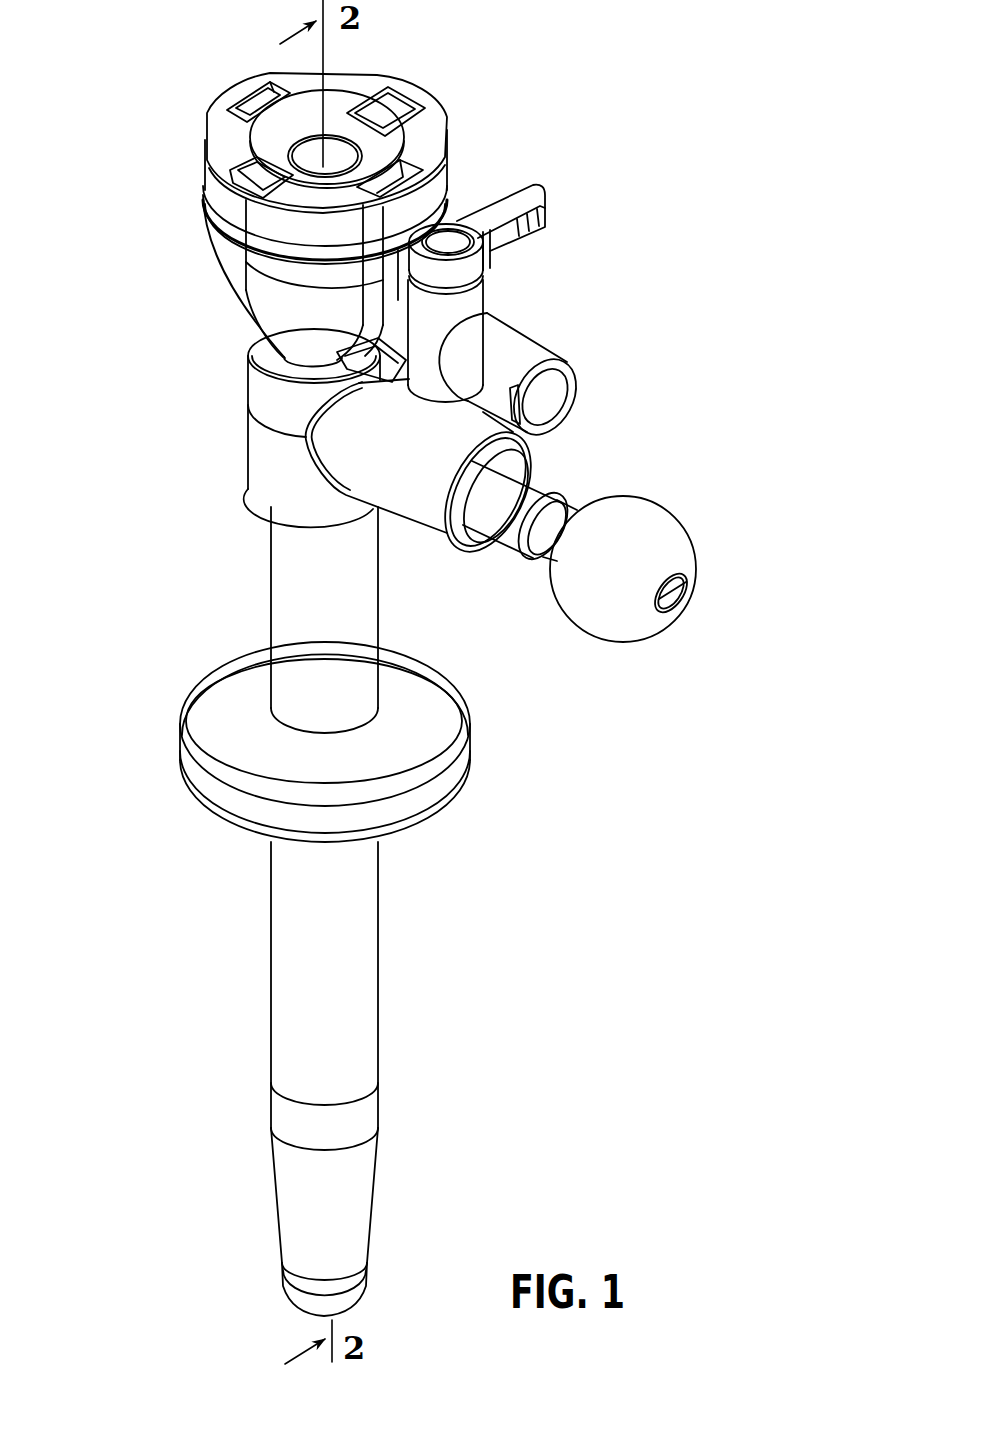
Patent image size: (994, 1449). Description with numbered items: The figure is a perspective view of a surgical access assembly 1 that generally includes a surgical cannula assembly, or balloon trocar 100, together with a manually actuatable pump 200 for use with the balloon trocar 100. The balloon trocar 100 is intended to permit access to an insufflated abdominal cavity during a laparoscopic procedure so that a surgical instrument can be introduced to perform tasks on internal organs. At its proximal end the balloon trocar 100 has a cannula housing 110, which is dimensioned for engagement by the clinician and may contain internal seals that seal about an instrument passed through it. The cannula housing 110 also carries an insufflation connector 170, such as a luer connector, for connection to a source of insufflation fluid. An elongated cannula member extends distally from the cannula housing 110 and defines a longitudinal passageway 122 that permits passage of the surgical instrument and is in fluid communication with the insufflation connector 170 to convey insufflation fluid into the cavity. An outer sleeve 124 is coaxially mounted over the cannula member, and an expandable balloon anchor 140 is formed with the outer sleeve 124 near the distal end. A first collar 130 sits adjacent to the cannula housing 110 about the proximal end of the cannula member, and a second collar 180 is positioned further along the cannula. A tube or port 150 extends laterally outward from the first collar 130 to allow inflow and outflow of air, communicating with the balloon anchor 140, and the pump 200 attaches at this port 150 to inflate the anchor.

The surgical access assembly 1 is at (636, 104).
The balloon trocar 100 is at (502, 161).
The cannula housing 110 is at (212, 212).
The longitudinal passageway 122 is at (337, 148).
The outer sleeve 124 is at (274, 996).
The first collar 130 is at (258, 453).
The balloon anchor 140 is at (277, 1210).
The port 150 is at (443, 531).
The insufflation connector 170 is at (538, 355).
The second collar 180 is at (186, 717).
The pump 200 is at (703, 512).